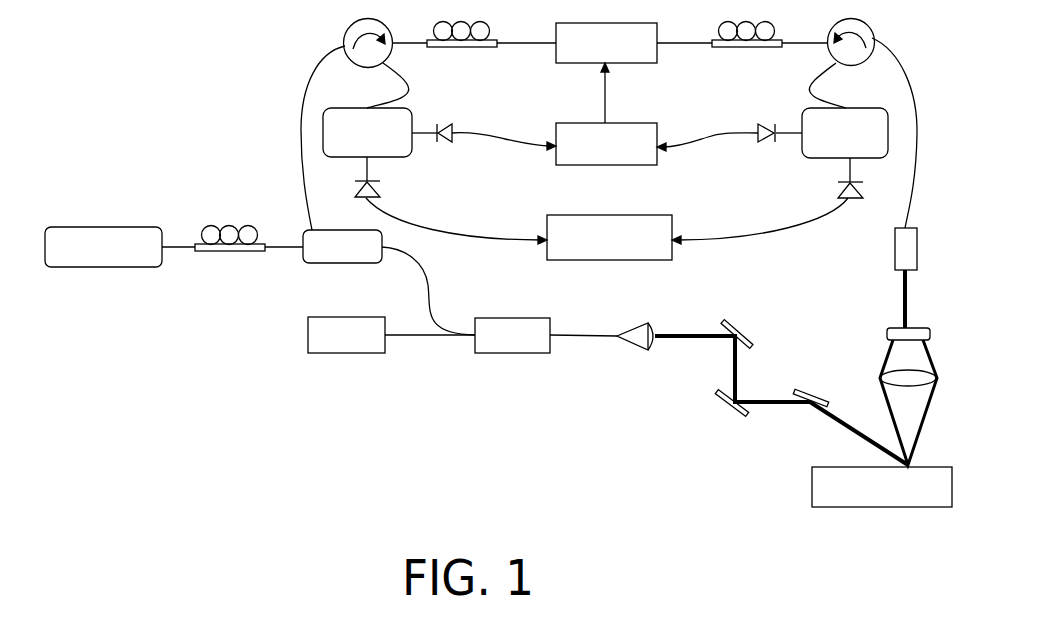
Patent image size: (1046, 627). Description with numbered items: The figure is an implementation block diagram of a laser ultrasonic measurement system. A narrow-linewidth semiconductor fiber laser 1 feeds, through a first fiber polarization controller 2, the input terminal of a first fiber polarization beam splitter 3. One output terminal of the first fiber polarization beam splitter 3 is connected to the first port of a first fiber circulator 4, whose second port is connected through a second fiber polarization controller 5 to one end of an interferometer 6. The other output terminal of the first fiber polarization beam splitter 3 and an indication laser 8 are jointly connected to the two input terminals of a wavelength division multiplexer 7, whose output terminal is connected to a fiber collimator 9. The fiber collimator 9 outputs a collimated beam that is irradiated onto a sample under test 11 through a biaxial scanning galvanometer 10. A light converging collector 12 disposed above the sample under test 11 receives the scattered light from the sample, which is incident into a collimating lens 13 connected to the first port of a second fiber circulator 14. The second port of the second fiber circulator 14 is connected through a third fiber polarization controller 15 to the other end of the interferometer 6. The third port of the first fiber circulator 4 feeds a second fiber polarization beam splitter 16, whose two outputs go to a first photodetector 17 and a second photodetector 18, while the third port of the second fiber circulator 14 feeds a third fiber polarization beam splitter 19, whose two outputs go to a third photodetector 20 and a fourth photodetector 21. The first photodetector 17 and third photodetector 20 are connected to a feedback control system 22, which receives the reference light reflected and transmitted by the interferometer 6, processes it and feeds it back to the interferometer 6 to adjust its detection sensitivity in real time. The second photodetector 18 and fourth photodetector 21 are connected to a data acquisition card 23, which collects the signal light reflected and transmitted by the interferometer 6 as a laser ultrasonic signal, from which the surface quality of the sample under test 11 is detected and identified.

The narrow-linewidth semiconductor fiber laser 1 is at (103, 247).
The first fiber polarization controller 2 is at (230, 251).
The first fiber polarization beam splitter 3 is at (342, 246).
The first fiber circulator 4 is at (368, 56).
The second fiber polarization controller 5 is at (462, 46).
The interferometer 6 is at (606, 43).
The wavelength division multiplexer 7 is at (512, 335).
The indication laser 8 is at (346, 335).
The fiber collimator 9 is at (635, 347).
The biaxial scanning galvanometer 10 is at (771, 366).
The sample under test 11 is at (882, 487).
The light converging collector 12 is at (920, 396).
The collimating lens 13 is at (919, 249).
The second fiber circulator 14 is at (851, 54).
The third fiber polarization controller 15 is at (747, 46).
The second fiber polarization beam splitter 16 is at (367, 132).
The first photodetector 17 is at (380, 191).
The second photodetector 18 is at (441, 145).
The third fiber polarization beam splitter 19 is at (845, 133).
The third photodetector 20 is at (855, 205).
The fourth photodetector 21 is at (770, 145).
The feedback control system 22 is at (606, 144).
The data acquisition card 23 is at (609, 237).